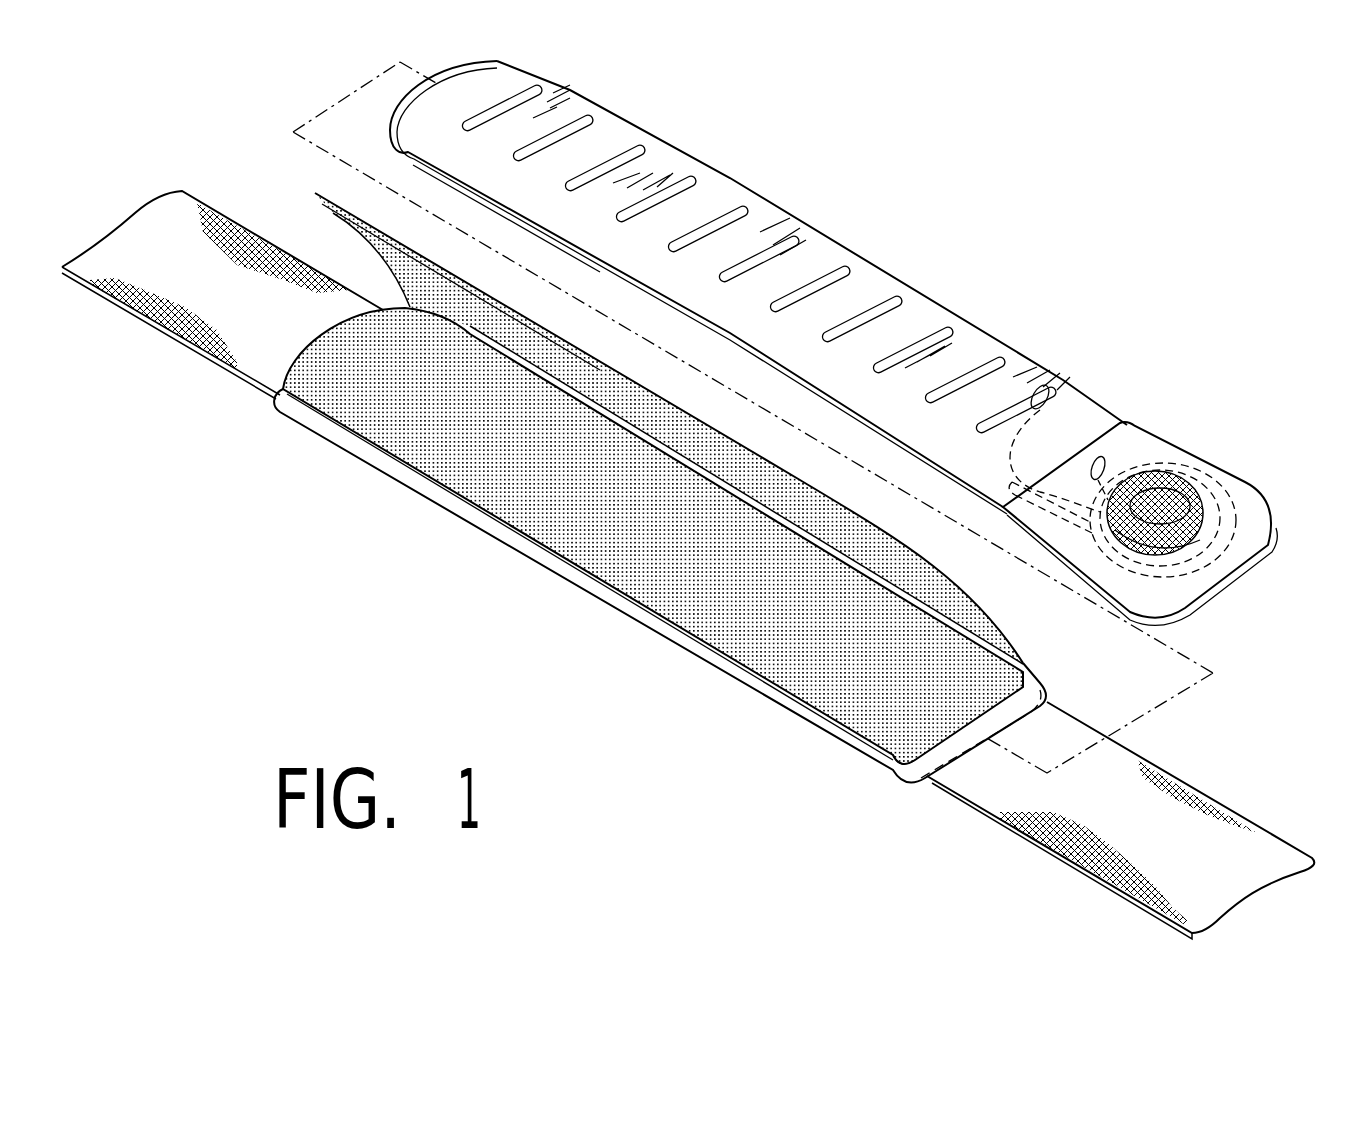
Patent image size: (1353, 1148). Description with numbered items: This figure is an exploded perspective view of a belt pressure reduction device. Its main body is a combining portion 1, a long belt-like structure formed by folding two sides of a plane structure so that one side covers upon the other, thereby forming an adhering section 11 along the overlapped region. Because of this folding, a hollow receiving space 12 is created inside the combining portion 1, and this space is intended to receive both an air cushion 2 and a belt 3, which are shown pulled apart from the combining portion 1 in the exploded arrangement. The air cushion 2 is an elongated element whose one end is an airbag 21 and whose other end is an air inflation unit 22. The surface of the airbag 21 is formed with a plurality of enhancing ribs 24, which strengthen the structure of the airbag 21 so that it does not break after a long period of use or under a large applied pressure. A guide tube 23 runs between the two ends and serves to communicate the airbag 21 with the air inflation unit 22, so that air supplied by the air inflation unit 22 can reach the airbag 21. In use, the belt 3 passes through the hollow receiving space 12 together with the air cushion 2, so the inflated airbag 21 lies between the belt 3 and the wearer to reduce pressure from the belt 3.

The combining portion 1 is at (659, 523).
The adhering section 11 is at (490, 322).
The hollow receiving space 12 is at (927, 757).
The air cushion 2 is at (833, 343).
The airbag 21 is at (714, 170).
The air inflation unit 22 is at (1183, 457).
The guide tube 23 is at (1033, 424).
The enhancing ribs 24 is at (850, 268).
The belt 3 is at (1263, 833).